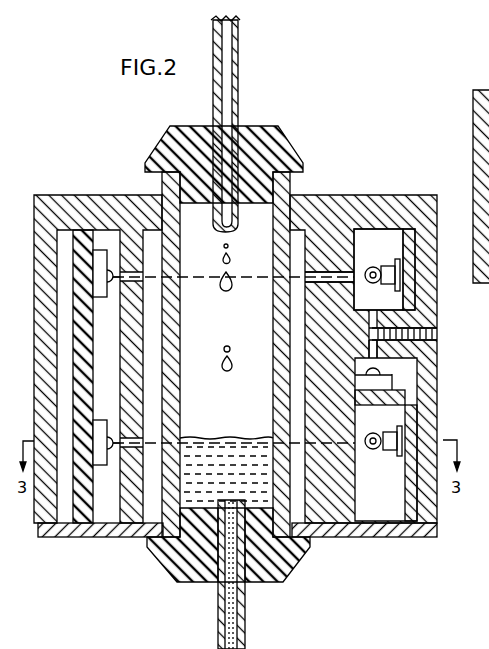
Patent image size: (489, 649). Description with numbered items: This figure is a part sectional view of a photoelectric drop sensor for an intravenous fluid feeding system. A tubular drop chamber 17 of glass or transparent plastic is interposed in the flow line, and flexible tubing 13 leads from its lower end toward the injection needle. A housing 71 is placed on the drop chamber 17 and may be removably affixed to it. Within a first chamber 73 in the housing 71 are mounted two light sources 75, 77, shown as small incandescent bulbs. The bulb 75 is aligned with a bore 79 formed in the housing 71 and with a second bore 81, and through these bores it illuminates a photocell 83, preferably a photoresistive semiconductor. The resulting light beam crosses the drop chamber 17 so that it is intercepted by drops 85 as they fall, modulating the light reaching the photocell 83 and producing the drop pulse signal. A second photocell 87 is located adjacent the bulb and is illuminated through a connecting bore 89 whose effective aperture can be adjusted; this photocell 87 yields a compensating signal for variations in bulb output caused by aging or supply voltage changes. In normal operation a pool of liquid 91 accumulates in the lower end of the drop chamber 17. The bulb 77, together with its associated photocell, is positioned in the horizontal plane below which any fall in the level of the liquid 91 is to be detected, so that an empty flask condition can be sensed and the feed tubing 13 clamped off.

The tubing 13 is at (246, 612).
The drop chamber 17 is at (142, 178).
The housing 71 is at (427, 375).
The first chamber 73 is at (371, 231).
The light source 75 is at (365, 283).
The light source 77 is at (370, 450).
The bore 79 is at (337, 272).
The second bore 81 is at (130, 268).
The photocell 83 is at (98, 297).
The drops 85 is at (233, 283).
The second photocell 87 is at (394, 381).
The connecting bore / third photocell 89 is at (97, 420).
The pool of liquid 91 is at (421, 330).